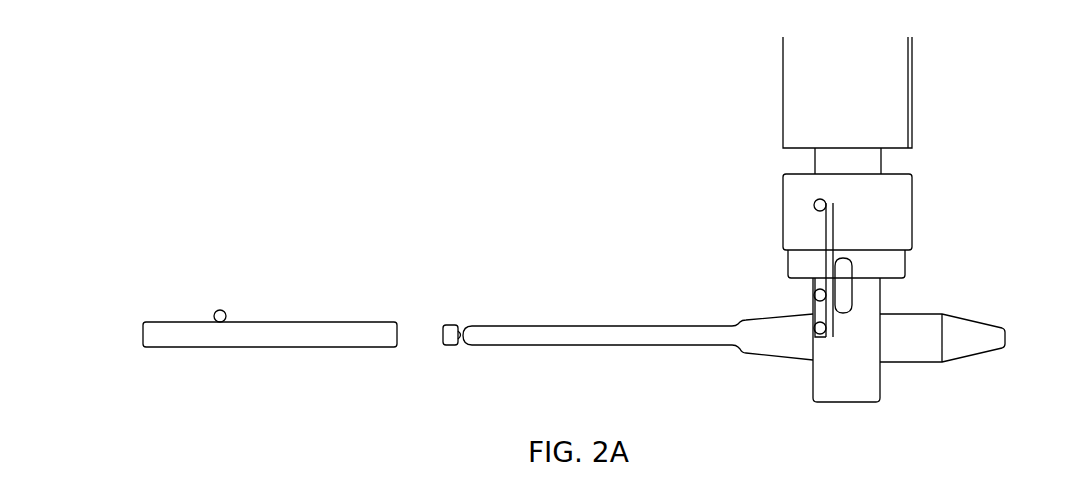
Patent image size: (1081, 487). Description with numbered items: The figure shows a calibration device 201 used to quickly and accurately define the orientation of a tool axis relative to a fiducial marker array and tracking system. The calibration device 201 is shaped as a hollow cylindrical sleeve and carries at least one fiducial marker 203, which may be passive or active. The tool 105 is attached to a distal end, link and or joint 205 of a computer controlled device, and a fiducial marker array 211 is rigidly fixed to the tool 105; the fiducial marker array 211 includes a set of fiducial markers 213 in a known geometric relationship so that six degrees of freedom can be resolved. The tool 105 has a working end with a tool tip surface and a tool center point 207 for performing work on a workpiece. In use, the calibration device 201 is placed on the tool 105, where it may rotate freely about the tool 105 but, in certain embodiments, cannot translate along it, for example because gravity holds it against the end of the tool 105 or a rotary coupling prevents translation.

The tool 105 is at (655, 326).
The calibration device 201 is at (300, 322).
The fiducial marker 203 is at (217, 310).
The distal end, link and or joint 205 is at (783, 108).
The tool center point 207 is at (443, 340).
The fiducial marker array 211 is at (835, 230).
The fiducial markers 213 is at (817, 332).